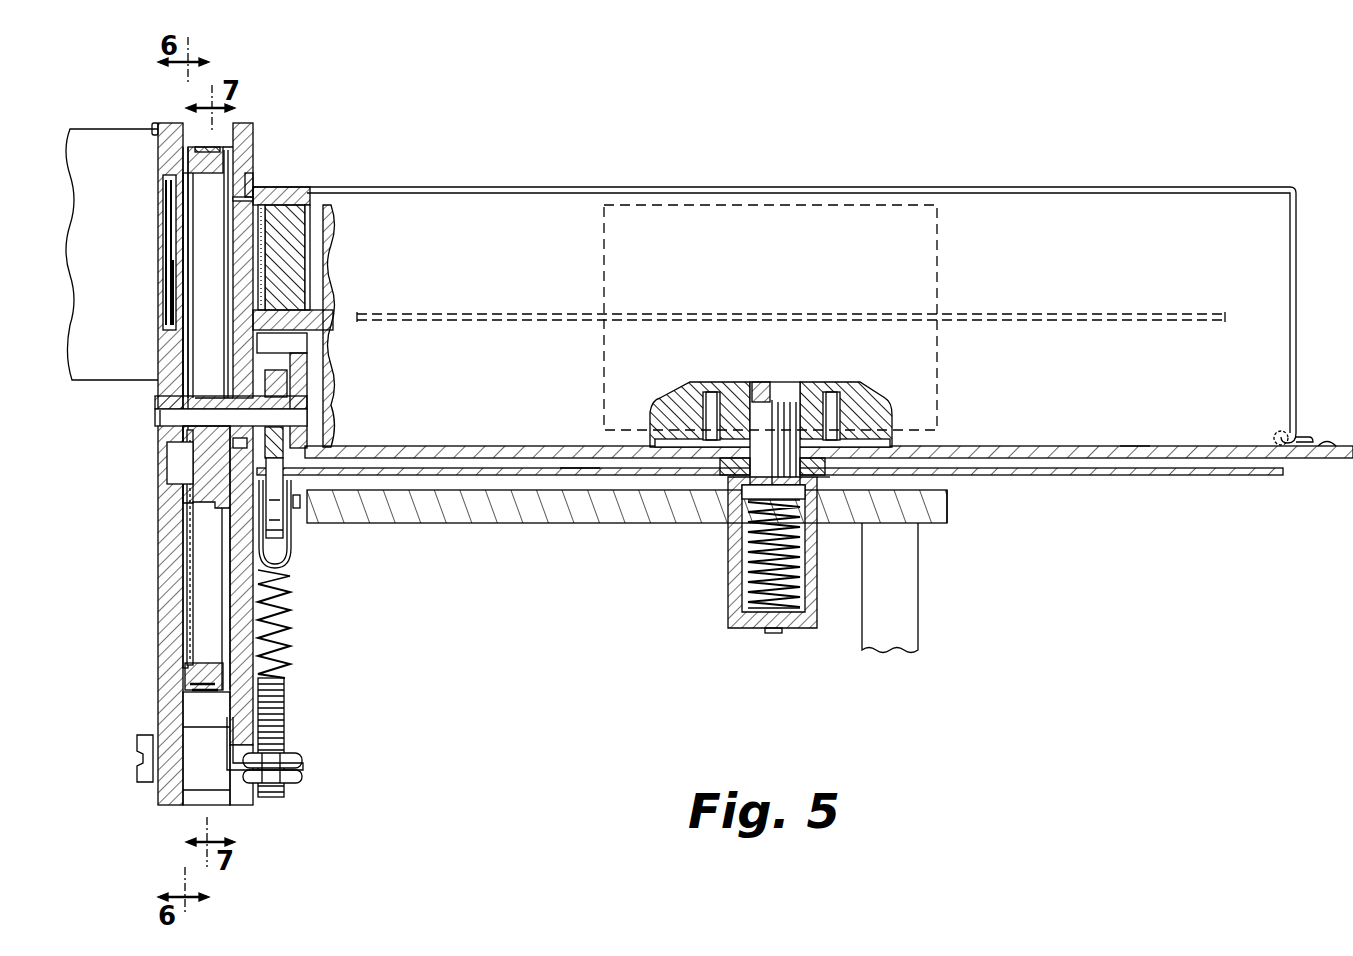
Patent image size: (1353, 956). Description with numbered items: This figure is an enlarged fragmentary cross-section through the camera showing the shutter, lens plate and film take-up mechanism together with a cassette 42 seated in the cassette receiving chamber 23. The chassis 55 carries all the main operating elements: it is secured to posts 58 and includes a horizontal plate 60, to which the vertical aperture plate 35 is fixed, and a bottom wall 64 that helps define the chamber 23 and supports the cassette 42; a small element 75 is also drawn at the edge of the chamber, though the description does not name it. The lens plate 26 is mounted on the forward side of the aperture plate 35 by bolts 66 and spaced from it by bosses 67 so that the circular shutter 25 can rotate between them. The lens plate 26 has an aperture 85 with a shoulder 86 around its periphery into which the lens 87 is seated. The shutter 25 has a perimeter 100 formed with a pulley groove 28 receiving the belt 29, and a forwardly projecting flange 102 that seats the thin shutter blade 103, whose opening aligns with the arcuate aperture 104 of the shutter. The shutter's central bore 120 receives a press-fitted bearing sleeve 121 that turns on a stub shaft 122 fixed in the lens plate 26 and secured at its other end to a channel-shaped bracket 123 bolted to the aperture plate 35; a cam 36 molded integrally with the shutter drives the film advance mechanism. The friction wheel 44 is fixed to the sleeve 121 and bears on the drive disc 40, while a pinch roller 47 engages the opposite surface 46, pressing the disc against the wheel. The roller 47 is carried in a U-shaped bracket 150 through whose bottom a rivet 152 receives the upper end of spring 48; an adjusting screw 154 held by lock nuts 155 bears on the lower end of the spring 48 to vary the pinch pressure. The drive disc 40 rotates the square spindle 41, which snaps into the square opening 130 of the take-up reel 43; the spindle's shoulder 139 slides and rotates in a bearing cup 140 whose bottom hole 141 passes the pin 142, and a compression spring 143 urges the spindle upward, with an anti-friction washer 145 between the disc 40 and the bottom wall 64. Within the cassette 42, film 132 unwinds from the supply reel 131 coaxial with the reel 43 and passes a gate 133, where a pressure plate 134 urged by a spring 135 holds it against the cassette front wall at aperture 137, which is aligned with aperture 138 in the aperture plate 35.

The cassette receiving chamber 23 is at (1142, 134).
The circular shutter 25 is at (186, 678).
The lens plate 26 is at (156, 697).
The peripheral pulley groove 28 is at (207, 665).
The belt 29 is at (196, 691).
The aperture plate 35 is at (253, 125).
The cam 36 is at (217, 520).
The drive disc 40 is at (582, 466).
The spindle 41 is at (786, 400).
The cassette 42 is at (816, 222).
The take-up reel 43 is at (941, 401).
The friction wheel 44 is at (306, 445).
The opposite surface 46 is at (366, 478).
The pinch roller 47 is at (284, 537).
The spring 48 is at (300, 616).
The chassis 55 is at (949, 511).
The posts 58 is at (912, 634).
The horizontal plate 60 is at (592, 522).
The bottom wall 64 is at (1125, 448).
The bolts 66 is at (139, 781).
The bosses 67 is at (203, 780).
The latch 75 is at (1311, 437).
The aperture 85 is at (181, 196).
The shoulder 86 is at (174, 122).
The lens 87 is at (93, 378).
The perimeter 100 is at (228, 140).
The flange 102 is at (186, 160).
The shutter blade 103 is at (183, 568).
The arcuate aperture 104 is at (192, 256).
The central bore 120 is at (160, 412).
The bearing sleeve 121 is at (183, 397).
The stub shaft 122 is at (297, 417).
The channel-shaped bracket 123 is at (301, 371).
The square opening 130 is at (760, 381).
The supply reel 131 is at (941, 263).
The film 132 is at (300, 252).
The gate 133 is at (298, 189).
The pressure plate 134 is at (309, 266).
The spring 135 is at (325, 284).
The aperture 137 is at (260, 193).
The aperture 138 is at (237, 233).
The shoulder 139 is at (826, 480).
The bearing cup 140 is at (728, 630).
The hole 141 is at (773, 633).
The pin 142 is at (746, 576).
The compression spring 143 is at (745, 562).
The anti-friction washer 145 is at (727, 480).
The U-shaped bracket 150 is at (292, 556).
The rivet 152 is at (291, 590).
The adjusting screw 154 is at (285, 710).
The lock nuts 155 is at (304, 775).